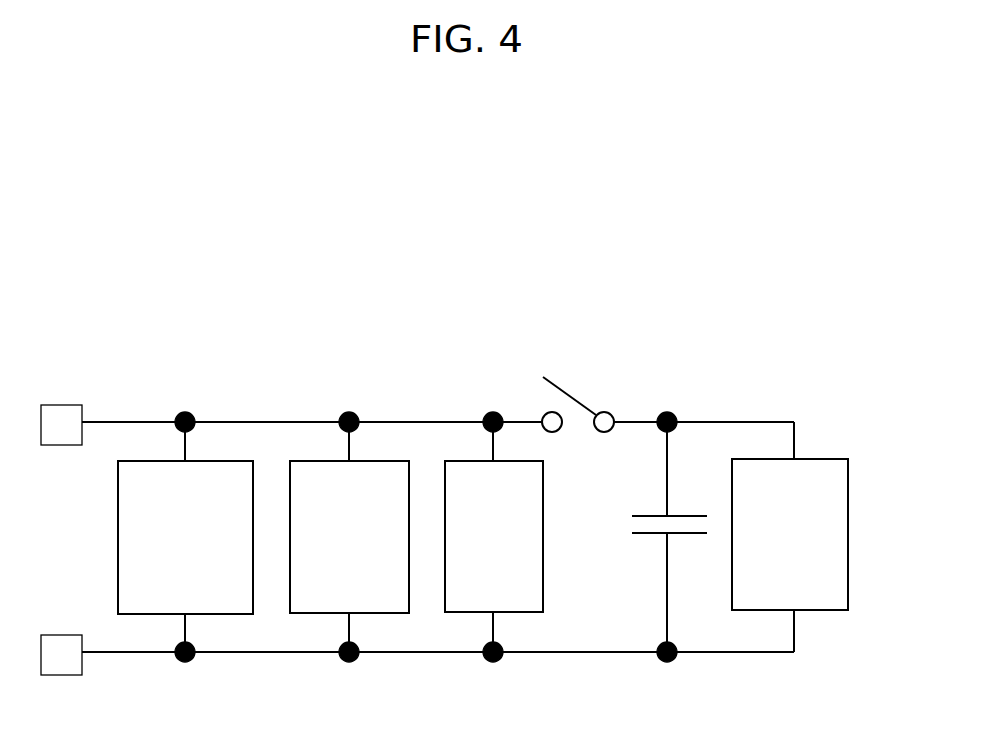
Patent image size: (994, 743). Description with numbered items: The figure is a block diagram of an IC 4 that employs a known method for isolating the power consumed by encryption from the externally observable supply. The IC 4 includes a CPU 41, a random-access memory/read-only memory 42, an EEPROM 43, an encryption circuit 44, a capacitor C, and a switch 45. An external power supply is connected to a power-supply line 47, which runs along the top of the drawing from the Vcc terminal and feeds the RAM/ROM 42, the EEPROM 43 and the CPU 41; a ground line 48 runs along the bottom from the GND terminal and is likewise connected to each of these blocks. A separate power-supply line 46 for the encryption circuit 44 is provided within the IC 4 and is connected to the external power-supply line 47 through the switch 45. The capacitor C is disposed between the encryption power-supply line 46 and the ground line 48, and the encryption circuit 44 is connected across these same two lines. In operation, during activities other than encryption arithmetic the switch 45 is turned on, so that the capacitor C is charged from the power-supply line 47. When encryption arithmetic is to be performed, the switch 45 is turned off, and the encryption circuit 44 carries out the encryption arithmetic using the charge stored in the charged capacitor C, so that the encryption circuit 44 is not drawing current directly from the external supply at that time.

The IC 4 is at (459, 266).
The CPU 41 is at (543, 480).
The random-access memory (RAM)/read-only memory (ROM) 42 is at (118, 519).
The EEPROM 43 is at (388, 613).
The encryption circuit 44 is at (848, 528).
The switch 45 is at (583, 392).
The power-supply line 46 is at (718, 420).
The power-supply line 47 is at (268, 420).
The ground (GND) line 48 is at (578, 653).
The capacitor C is at (632, 524).